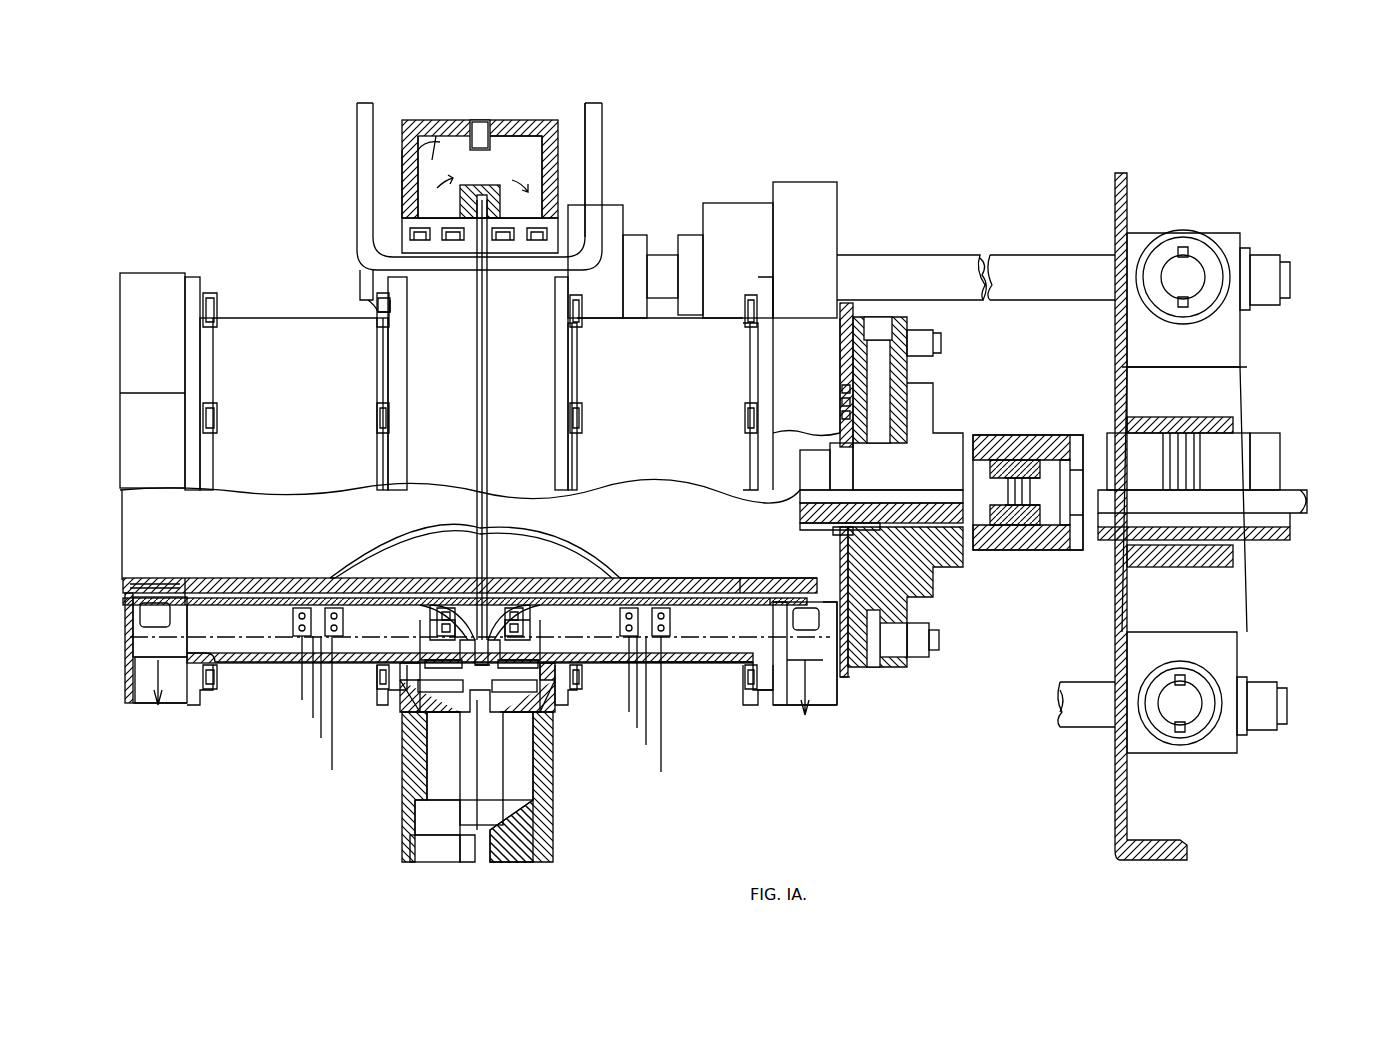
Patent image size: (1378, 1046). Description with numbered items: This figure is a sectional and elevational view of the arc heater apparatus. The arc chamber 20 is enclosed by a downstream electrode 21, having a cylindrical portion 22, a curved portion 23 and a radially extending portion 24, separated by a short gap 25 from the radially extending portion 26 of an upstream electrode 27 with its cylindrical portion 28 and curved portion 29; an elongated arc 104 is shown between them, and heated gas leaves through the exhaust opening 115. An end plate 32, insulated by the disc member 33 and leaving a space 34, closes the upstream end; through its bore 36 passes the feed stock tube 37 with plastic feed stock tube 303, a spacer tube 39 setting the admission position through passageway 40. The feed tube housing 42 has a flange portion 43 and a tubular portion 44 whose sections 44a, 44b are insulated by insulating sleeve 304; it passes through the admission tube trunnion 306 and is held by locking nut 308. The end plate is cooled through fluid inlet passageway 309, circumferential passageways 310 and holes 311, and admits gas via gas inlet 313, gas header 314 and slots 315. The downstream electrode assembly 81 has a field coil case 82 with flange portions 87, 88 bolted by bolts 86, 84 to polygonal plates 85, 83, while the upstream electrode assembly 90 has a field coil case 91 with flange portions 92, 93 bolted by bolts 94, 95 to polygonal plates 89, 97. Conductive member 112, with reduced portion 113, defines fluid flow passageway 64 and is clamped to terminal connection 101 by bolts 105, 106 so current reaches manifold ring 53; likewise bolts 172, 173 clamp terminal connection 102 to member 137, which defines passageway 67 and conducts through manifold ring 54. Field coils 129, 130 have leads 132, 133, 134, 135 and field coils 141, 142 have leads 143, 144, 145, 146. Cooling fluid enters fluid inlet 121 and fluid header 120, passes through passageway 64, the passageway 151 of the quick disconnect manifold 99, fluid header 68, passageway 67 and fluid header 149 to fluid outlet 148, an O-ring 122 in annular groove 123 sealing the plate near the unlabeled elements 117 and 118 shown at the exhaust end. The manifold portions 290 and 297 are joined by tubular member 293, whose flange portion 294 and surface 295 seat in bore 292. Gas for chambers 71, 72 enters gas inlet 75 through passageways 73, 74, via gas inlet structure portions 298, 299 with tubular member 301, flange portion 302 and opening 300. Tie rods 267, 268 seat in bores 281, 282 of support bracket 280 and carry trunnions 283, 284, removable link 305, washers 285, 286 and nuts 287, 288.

The arc chamber 20 is at (452, 516).
The downstream electrode 21 is at (292, 543).
The cylindrical portion 22 is at (268, 578).
The curved portion 23 is at (473, 605).
The radially extending portion 24 is at (445, 600).
The gap 25 is at (487, 507).
The radially extending portion 26 is at (510, 605).
The upstream electrode 27 is at (719, 540).
The cylindrical portion 28 is at (708, 578).
The curved portion 29 is at (492, 600).
The end plate 32 is at (908, 664).
The disc member 33 is at (845, 676).
The space 34 is at (840, 571).
The bore 36 is at (870, 500).
The feed stock tube 37 is at (802, 510).
The spacer tube 39 is at (810, 527).
The passageway 40 is at (802, 498).
The feed tube housing 42 is at (1020, 435).
The flange portion 43 is at (925, 398).
The tubular portion 44 is at (988, 552).
The tubular portion section 44a is at (1032, 552).
The tubular portion section 44b is at (1135, 552).
The slotted manifold ring 53 is at (465, 668).
The manifold ring 54 is at (498, 668).
The fluid flow passageway 64 is at (385, 598).
The fluid passageway 67 is at (742, 578).
The fluid header 68 is at (525, 628).
The chamber 71 is at (400, 690).
The chamber 72 is at (556, 692).
The passageway 73 is at (430, 757).
The passageway 74 is at (520, 766).
The gas inlet 75 is at (428, 860).
The downstream electrode assembly 81 is at (320, 346).
The field coil case 82 is at (278, 318).
The polygonal plate 83 is at (414, 350).
The bolts 84 is at (376, 418).
The polygonal plate 85 is at (128, 428).
The bolts 86 is at (216, 416).
The flange portion 87 is at (195, 470).
The flange portion 88 is at (392, 453).
The polygonal plate 89 is at (550, 352).
The upstream electrode assembly 90 is at (690, 693).
The field coil case 91 is at (635, 660).
The flange portion 92 is at (572, 460).
The flange portion 93 is at (762, 465).
The bolts 94 is at (583, 416).
The bolts 95 is at (745, 416).
The polygonal plate 97 is at (782, 300).
The quick disconnect manifold 99 is at (492, 108).
The terminal connection 101 is at (365, 182).
The terminal connection 102 is at (594, 150).
The arc 104 is at (410, 545).
The bolt 105 is at (418, 240).
The bolt 106 is at (452, 240).
The cylindrical member 112 is at (288, 598).
The portion of reduced outside diameter 113 is at (156, 615).
The exhaust opening 115 is at (138, 514).
The seal 117 is at (183, 598).
The block 118 is at (161, 668).
The fluid header 120 is at (130, 638).
The fluid inlet 121 is at (145, 690).
The O-ring 122 is at (132, 584).
The annular groove 123 is at (126, 606).
The field coil 129 is at (292, 618).
The field coil 130 is at (337, 618).
The lead 132 is at (300, 696).
The lead 133 is at (311, 714).
The lead 134 is at (319, 734).
The lead 135 is at (330, 752).
The electrically conductive member 137 is at (758, 598).
The field coil 141 is at (618, 618).
The field coil 142 is at (664, 618).
The lead 143 is at (644, 766).
The lead 144 is at (647, 745).
The lead 145 is at (639, 728).
The lead 146 is at (631, 712).
The fluid outlet 148 is at (820, 703).
The fluid header 149 is at (805, 653).
The passageway 151 is at (428, 118).
The bolt 172 is at (502, 240).
The bolt 173 is at (537, 240).
The tie rod 267 is at (1020, 262).
The tie rod 268 is at (1090, 718).
The support bracket 280 is at (1117, 770).
The bore 281 is at (1113, 268).
The bore 282 is at (1116, 695).
The trunnion 283 is at (1232, 232).
The trunnion 284 is at (1228, 748).
The washer 285 is at (1248, 255).
The washer 286 is at (1243, 676).
The nut 287 is at (1258, 302).
The nut 288 is at (1260, 684).
The manifold portion 290 is at (520, 122).
The bore 292 is at (488, 120).
The tubular member 293 is at (519, 170).
The flange portion 294 is at (468, 182).
The surface 295 is at (446, 125).
The manifold portion 297 is at (404, 198).
The gas inlet structure portion 298 is at (410, 784).
The gas inlet structure portion 299 is at (550, 798).
The cylindrical opening 300 is at (535, 865).
The tubular member 301 is at (459, 817).
The flange portion 302 is at (472, 862).
The plastic feed stock tube 303 is at (1298, 488).
The insulating sleeve 304 is at (1078, 548).
The removable link 305 is at (1230, 348).
The admission tube trunnion 306 is at (1228, 418).
The locking nut 308 is at (1262, 432).
The fluid inlet passageway 309 is at (882, 325).
The circumferential passageways 310 is at (842, 534).
The holes 311 is at (852, 418).
The gas inlet 313 is at (880, 664).
The gas header 314 is at (893, 618).
The slots 315 is at (807, 619).